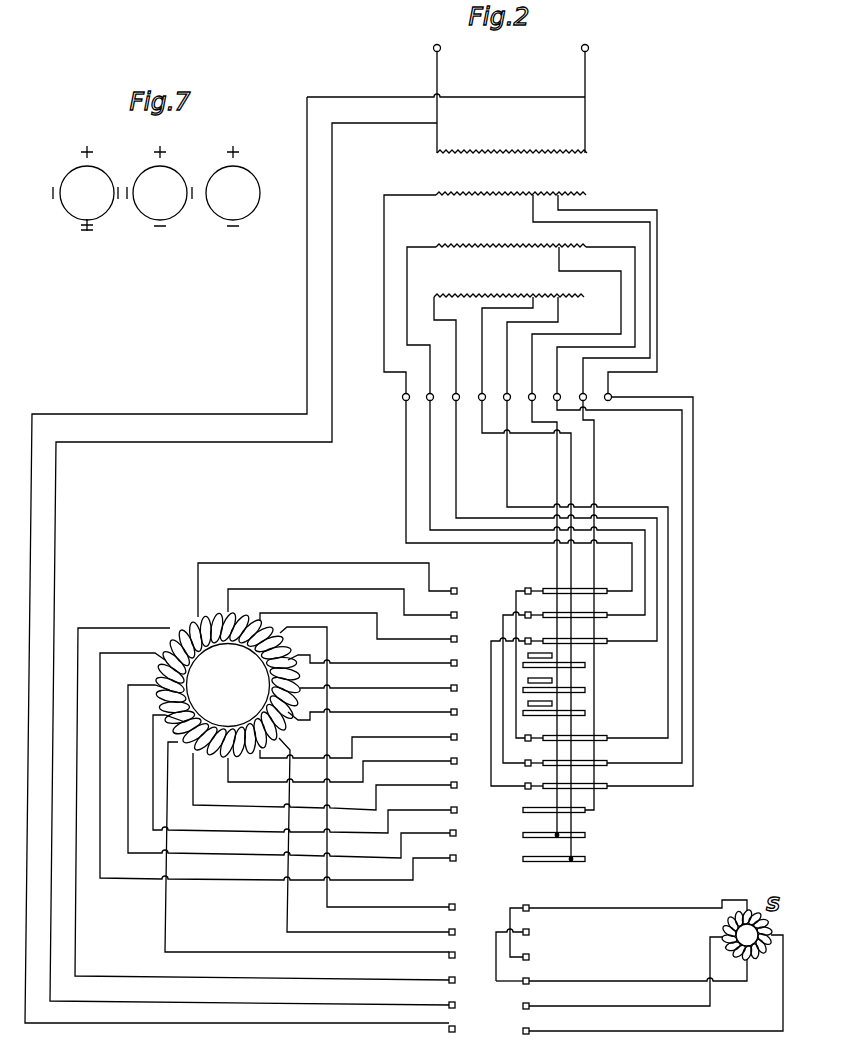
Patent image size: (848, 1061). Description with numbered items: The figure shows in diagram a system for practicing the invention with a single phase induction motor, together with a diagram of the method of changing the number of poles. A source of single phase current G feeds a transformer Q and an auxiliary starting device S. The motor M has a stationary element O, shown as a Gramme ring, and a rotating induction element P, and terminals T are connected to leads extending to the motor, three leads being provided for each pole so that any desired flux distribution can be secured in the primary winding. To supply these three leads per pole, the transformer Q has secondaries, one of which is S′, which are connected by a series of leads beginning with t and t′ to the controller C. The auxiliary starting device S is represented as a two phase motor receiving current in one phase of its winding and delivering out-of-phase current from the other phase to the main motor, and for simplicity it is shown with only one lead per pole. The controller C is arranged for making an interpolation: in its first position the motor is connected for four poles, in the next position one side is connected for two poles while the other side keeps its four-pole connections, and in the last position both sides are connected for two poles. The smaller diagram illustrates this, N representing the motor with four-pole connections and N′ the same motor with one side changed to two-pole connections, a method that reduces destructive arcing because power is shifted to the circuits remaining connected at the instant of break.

In FIG. 2, the source of single phase current G is at (448, 99).
In FIG. 2, the transformer Q is at (410, 280).
In FIG. 2, the auxiliary starting device S is at (511, 185).
In FIG. 2, the transformer secondary S′ is at (511, 236).
In FIG. 2, the lead t is at (518, 482).
In FIG. 2, the lead t′ is at (536, 494).
In FIG. 2, the terminals T is at (450, 796).
In FIG. 2, the controller C is at (554, 725).
In FIG. 2, the motor M is at (218, 681).
In FIG. 2, the stationary element O is at (160, 670).
In FIG. 2, the rotating induction element P is at (228, 685).
In FIG. 7, the motor with four-pole connections N is at (90, 188).
In FIG. 7, the motor with one side changed to two-pole connections N′ is at (162, 186).